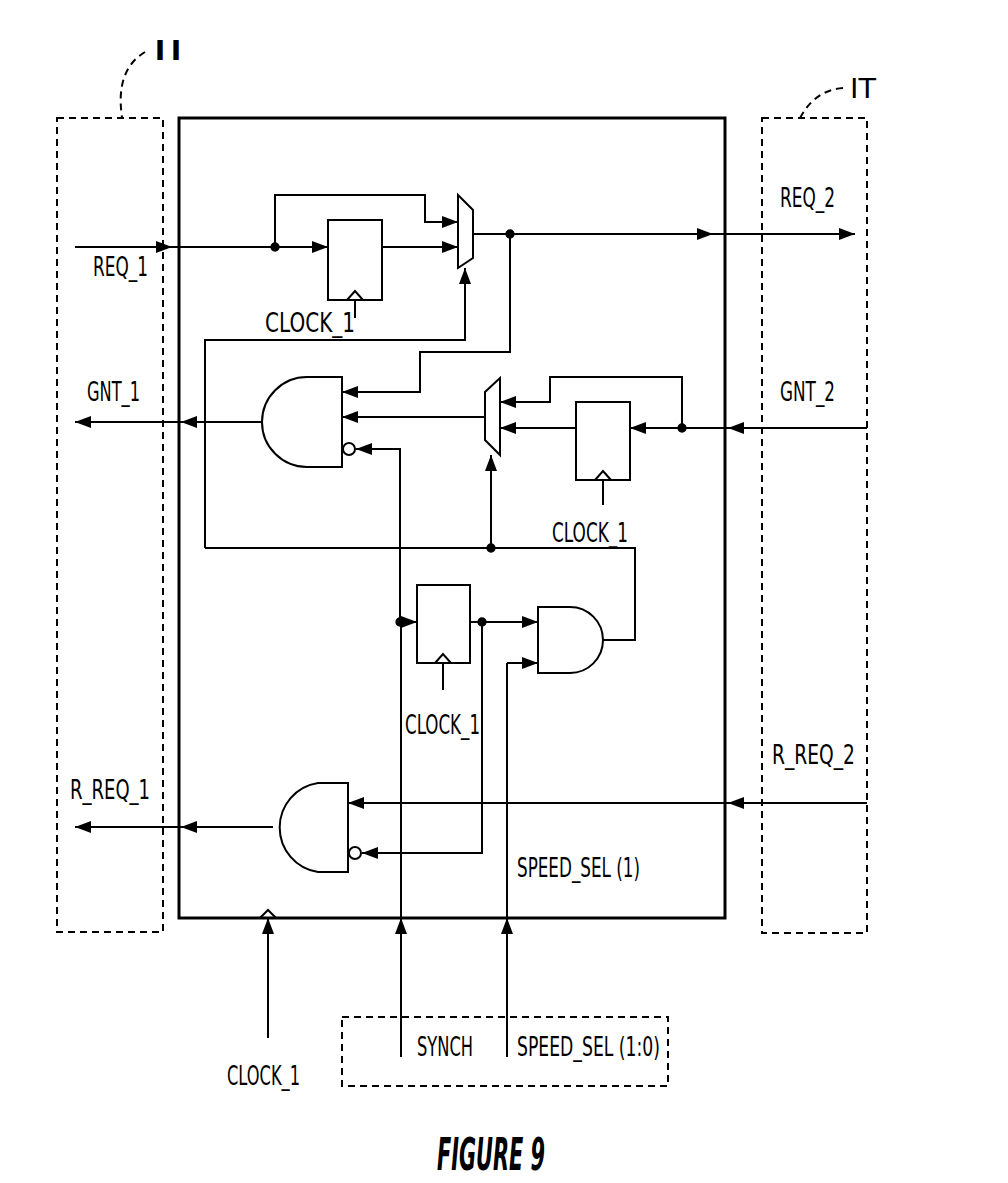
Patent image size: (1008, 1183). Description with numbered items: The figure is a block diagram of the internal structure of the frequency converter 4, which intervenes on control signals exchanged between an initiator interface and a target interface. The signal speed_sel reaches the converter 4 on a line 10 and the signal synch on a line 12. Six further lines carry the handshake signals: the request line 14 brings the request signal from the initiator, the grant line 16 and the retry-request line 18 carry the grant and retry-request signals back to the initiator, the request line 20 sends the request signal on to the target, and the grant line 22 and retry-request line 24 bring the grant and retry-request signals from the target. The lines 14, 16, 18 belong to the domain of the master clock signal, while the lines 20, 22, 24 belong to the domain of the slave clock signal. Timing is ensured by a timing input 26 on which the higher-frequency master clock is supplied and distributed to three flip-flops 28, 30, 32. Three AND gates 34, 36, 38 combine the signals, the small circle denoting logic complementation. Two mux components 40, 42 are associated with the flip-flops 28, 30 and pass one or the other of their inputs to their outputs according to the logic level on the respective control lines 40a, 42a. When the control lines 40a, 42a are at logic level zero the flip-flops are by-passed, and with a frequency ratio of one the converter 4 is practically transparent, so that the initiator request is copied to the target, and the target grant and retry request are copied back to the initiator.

The frequency converter 4 is at (682, 128).
The speed_sel line 10 is at (507, 978).
The synch line 12 is at (401, 978).
The req_1 line 14 is at (78, 247).
The gnt_1 line 16 is at (115, 422).
The r_req_1 line 18 is at (118, 829).
The req_2 line 20 is at (808, 236).
The gnt_2 line 22 is at (822, 430).
The r_req_2 line 24 is at (829, 805).
The timing input 26 is at (267, 980).
The flip-flop 28 is at (332, 270).
The flip-flop 30 is at (623, 458).
The flip-flop 32 is at (463, 590).
The AND gate 34 is at (297, 460).
The AND gate 36 is at (585, 662).
The AND gate 38 is at (318, 795).
The mux component 40 is at (468, 202).
The control line 40a is at (465, 318).
The mux component 42 is at (503, 380).
The control line 42a is at (491, 517).